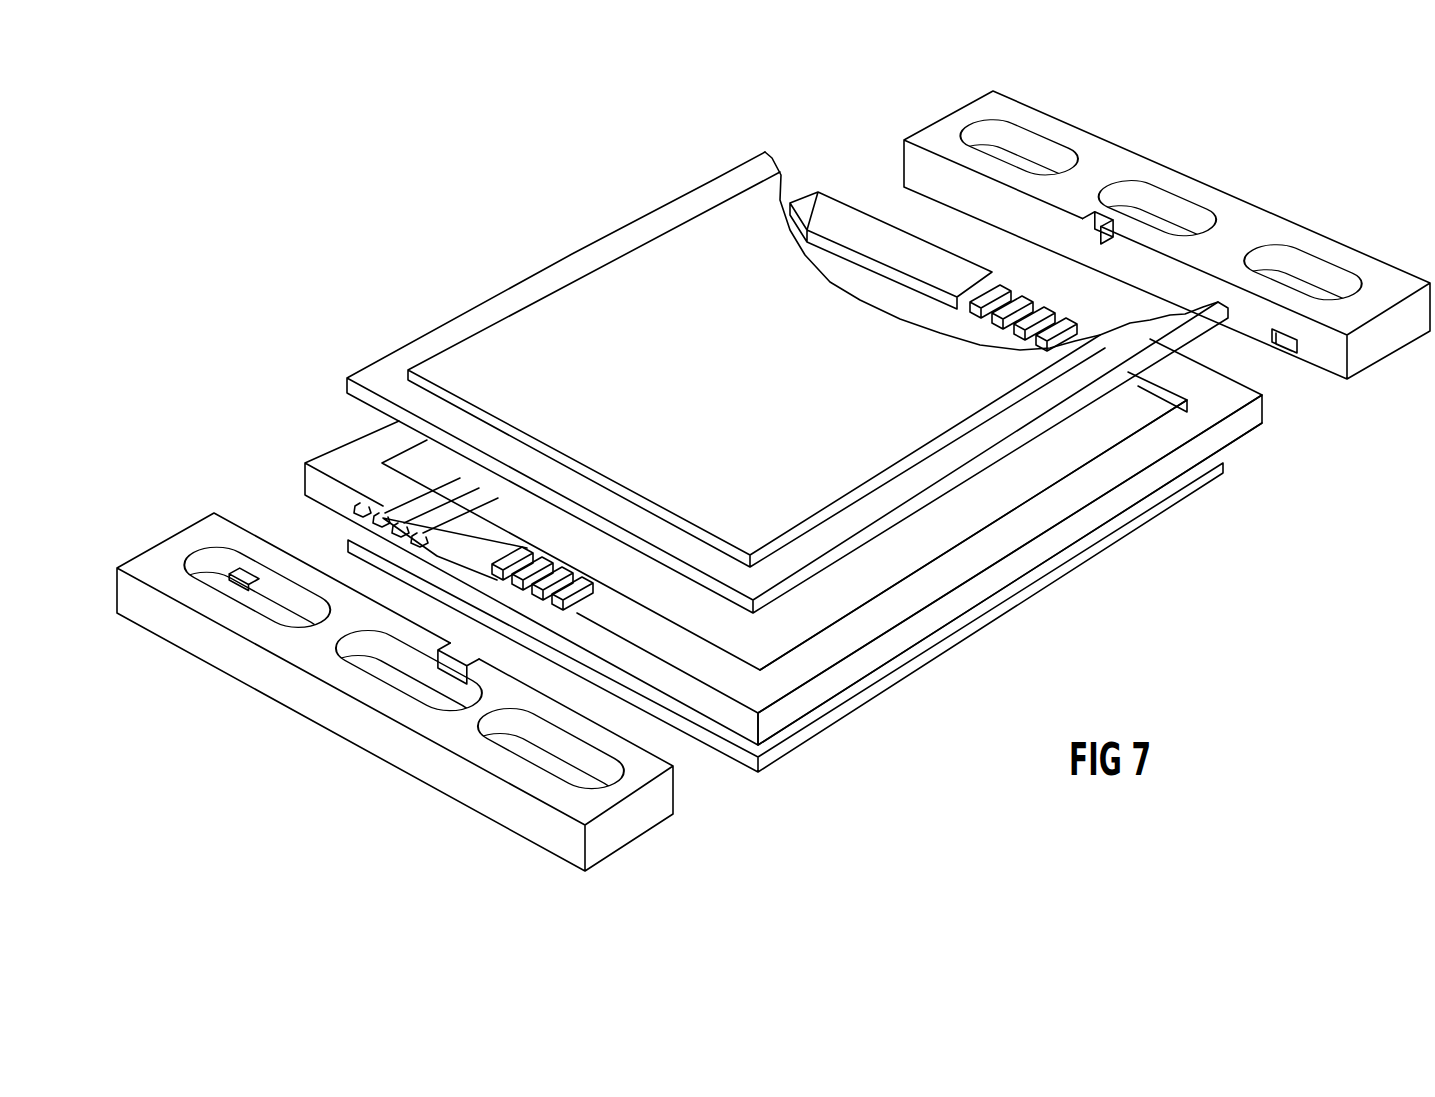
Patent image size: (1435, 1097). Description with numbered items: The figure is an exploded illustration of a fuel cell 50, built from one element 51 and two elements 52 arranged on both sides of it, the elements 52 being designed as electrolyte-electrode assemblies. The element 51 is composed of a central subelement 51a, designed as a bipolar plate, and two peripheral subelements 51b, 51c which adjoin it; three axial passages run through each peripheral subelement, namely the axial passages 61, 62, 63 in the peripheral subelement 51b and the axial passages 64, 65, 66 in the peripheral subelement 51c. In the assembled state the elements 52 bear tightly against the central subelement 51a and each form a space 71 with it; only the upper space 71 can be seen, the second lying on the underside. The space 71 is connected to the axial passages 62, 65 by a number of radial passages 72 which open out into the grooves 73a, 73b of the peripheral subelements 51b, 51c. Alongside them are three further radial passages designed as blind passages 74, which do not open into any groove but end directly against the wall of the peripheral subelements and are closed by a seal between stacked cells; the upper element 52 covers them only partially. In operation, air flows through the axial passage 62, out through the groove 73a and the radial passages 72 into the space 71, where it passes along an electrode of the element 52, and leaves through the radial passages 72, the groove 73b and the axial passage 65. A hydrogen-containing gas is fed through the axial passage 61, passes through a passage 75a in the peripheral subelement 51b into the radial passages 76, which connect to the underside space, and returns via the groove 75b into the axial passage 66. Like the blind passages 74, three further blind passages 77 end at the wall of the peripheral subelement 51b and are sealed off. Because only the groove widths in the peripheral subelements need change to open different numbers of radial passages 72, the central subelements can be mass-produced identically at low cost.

The fuel cell 50 is at (488, 221).
The element 51 is at (1145, 567).
The central subelement 51a is at (828, 688).
The peripheral subelement 51b is at (633, 823).
The peripheral subelement 51c is at (1386, 347).
The elements 52 is at (380, 377).
The axial passage 61 is at (259, 607).
The axial passage 62 is at (395, 681).
The axial passage 63 is at (533, 758).
The axial passage 64 is at (1029, 139).
The axial passage 65 is at (1146, 192).
The axial passage 66 is at (1283, 250).
The space 71 is at (953, 508).
The radial passages 72 is at (1007, 280).
The groove 73a is at (451, 683).
The groove 73b is at (1110, 222).
The blind passages 74 is at (1050, 300).
The passage 75a is at (240, 568).
The groove 75b is at (1289, 355).
The radial passages 76 is at (365, 497).
The blind passages 77 is at (450, 518).